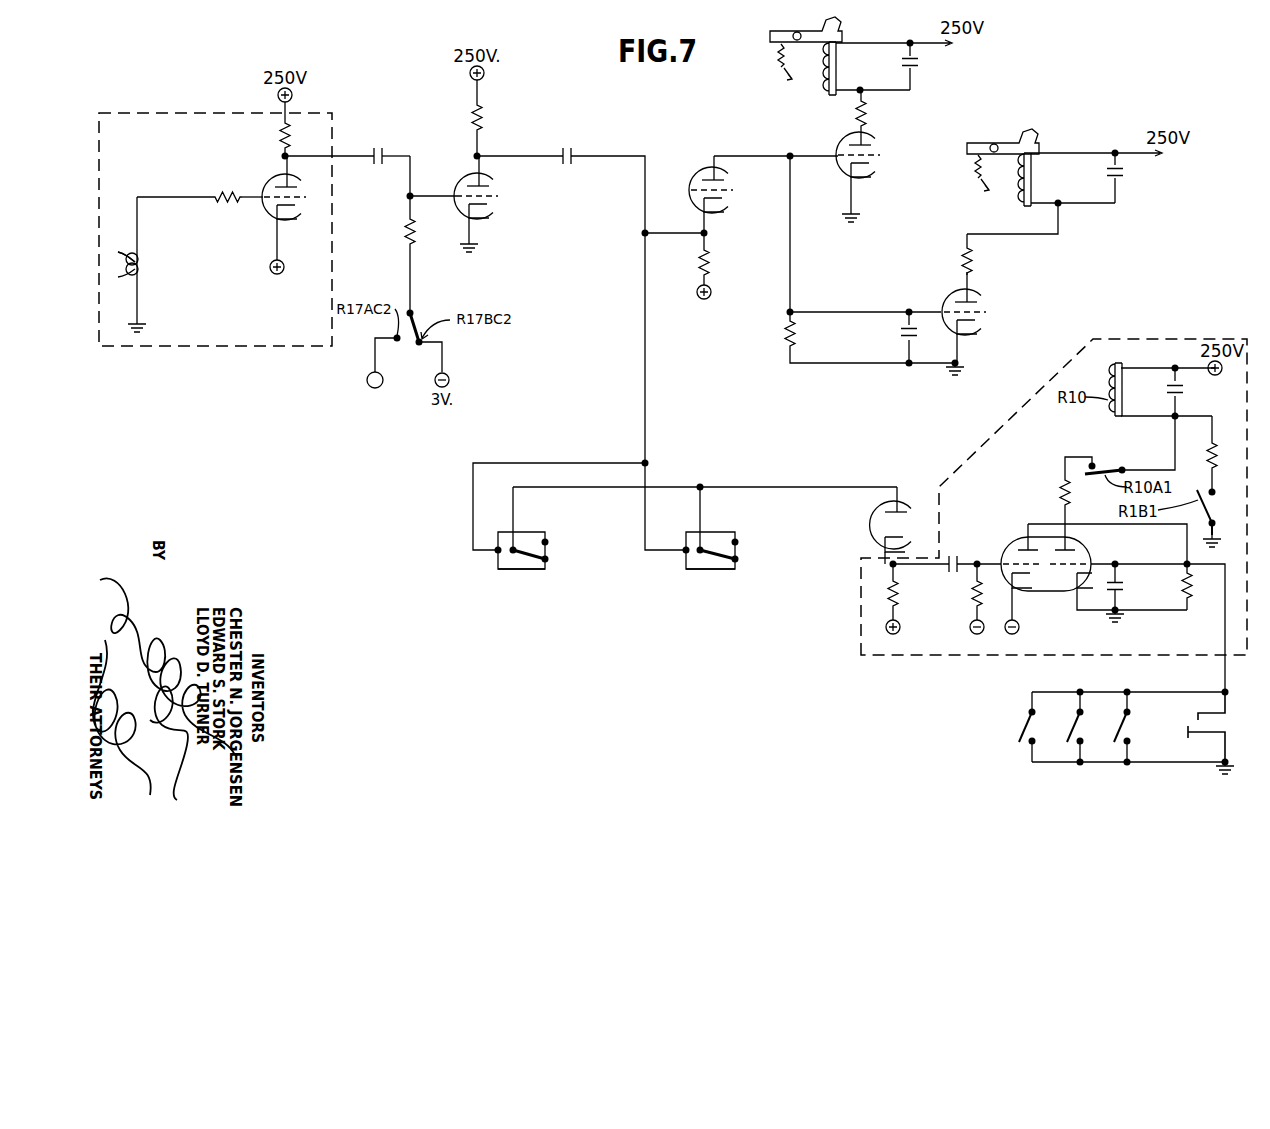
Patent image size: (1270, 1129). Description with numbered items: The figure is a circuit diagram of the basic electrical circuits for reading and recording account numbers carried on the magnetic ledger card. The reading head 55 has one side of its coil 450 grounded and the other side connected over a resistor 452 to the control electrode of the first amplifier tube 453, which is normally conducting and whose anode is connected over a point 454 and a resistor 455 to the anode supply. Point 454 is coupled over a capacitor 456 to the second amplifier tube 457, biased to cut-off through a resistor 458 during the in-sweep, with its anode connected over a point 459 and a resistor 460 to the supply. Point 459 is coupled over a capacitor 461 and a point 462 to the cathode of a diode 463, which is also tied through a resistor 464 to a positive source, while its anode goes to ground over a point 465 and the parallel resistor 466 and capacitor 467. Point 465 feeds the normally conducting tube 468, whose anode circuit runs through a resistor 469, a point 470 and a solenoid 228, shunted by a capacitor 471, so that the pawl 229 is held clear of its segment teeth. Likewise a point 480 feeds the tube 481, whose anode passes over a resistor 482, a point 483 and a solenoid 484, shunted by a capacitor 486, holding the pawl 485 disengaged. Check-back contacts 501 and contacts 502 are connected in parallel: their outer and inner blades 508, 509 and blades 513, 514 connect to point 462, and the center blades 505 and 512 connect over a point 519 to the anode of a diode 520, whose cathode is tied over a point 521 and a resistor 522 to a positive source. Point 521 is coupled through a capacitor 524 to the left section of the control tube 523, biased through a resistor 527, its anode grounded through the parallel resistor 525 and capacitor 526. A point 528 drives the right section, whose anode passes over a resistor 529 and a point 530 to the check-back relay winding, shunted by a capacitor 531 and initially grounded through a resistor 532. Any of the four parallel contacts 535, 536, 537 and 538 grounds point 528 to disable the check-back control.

The reading head 55 is at (133, 258).
The coil 450 is at (140, 262).
The resistor 452 is at (216, 192).
The first amplifier tube 453 is at (272, 182).
The point 454 is at (283, 156).
The resistor 455 is at (281, 135).
The capacitor 456 is at (377, 148).
The second amplifier tube 457 is at (460, 177).
The resistor 458 is at (405, 229).
The point 459 is at (480, 156).
The resistor 460 is at (470, 114).
The capacitor 461 is at (569, 146).
The point 462 is at (644, 233).
The diode 463 is at (698, 177).
The resistor 464 is at (710, 260).
The point 465 is at (789, 155).
The resistor 466 is at (785, 335).
The capacitor 467 is at (904, 340).
The tube 468 is at (868, 180).
The resistor 469 is at (856, 112).
The point 470 is at (860, 90).
The capacitor 471 is at (917, 66).
The solenoid 228 is at (824, 76).
The pawl 229 is at (840, 28).
The point 480 is at (908, 311).
The tube 481 is at (976, 339).
The resistor 482 is at (973, 264).
The point 483 is at (1061, 205).
The solenoid 484 is at (1020, 185).
The pawl 485 is at (1035, 139).
The capacitor 486 is at (1123, 178).
The set of contacts 501 is at (720, 518).
The set of contacts 502 is at (528, 518).
The center contact blade 505 is at (736, 558).
The outer contact blade 508 is at (736, 542).
The inner contact blade 509 is at (720, 569).
The center contact blade 512 is at (548, 558).
The outer contact blade 513 is at (546, 542).
The inner contact blade 514 is at (545, 569).
The point 519 is at (700, 487).
The diode 520 is at (905, 512).
The point 521 is at (885, 553).
The resistor 522 is at (885, 592).
The control tube 523 is at (1012, 539).
The capacitor 524 is at (949, 568).
The resistor 525 is at (1191, 598).
The capacitor 526 is at (1125, 586).
The resistor 527 is at (972, 592).
The point 528 is at (1116, 562).
The resistor 529 is at (1060, 490).
The point 530 is at (1173, 418).
The capacitor 531 is at (1180, 390).
The resistor 532 is at (1207, 445).
The contacts 535 is at (1024, 723).
The contacts 536 is at (1072, 728).
The contacts 537 is at (1118, 728).
The contacts 538 is at (1214, 716).